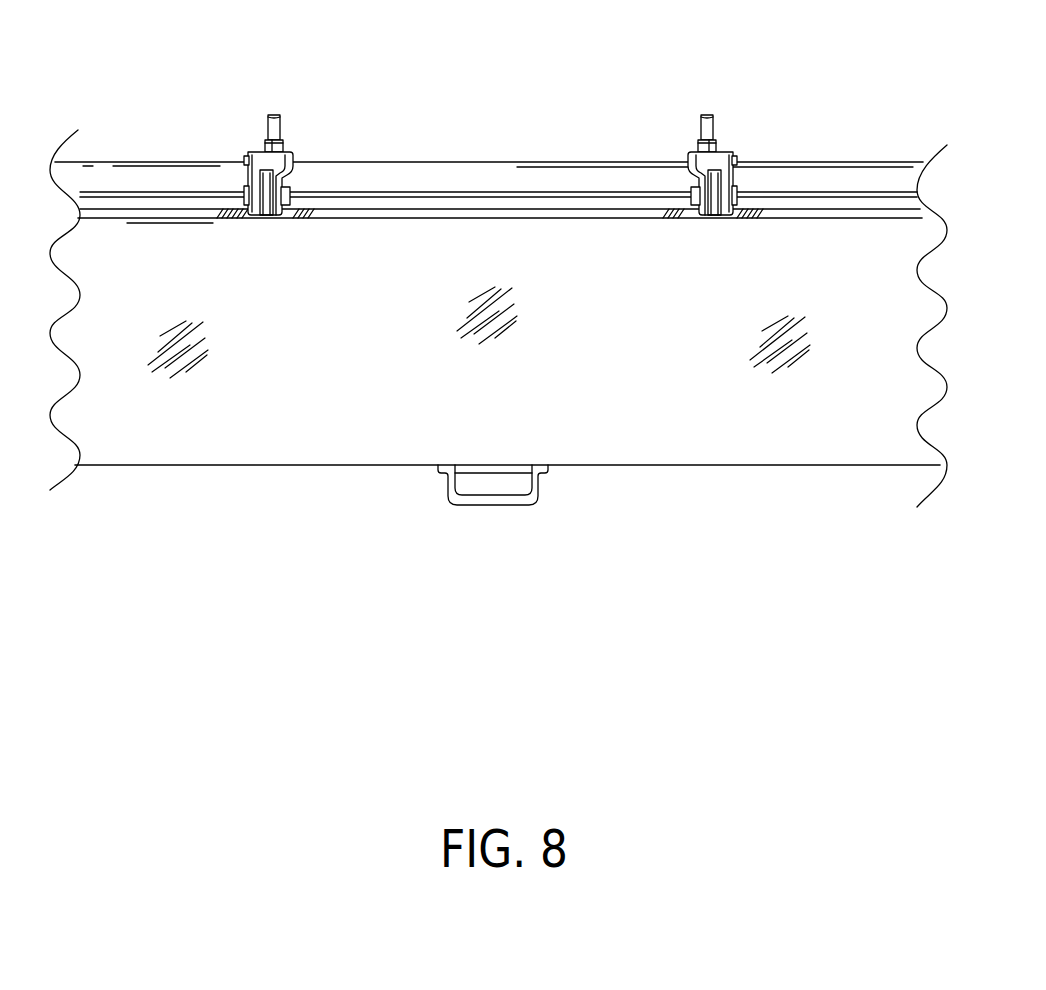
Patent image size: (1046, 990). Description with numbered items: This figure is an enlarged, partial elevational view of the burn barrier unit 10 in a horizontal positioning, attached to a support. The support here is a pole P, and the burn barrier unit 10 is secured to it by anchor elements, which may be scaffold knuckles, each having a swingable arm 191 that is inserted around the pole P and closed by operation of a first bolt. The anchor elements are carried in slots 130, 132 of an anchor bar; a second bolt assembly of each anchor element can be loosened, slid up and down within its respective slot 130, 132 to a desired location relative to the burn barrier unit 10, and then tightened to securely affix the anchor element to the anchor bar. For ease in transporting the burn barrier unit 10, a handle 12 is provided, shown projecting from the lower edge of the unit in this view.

The burn barrier unit 10 is at (678, 482).
The handle 12 is at (485, 507).
The slot 130 is at (216, 212).
The slot 132 is at (745, 210).
The swingable arm 191 is at (273, 104).
The pole P is at (430, 172).